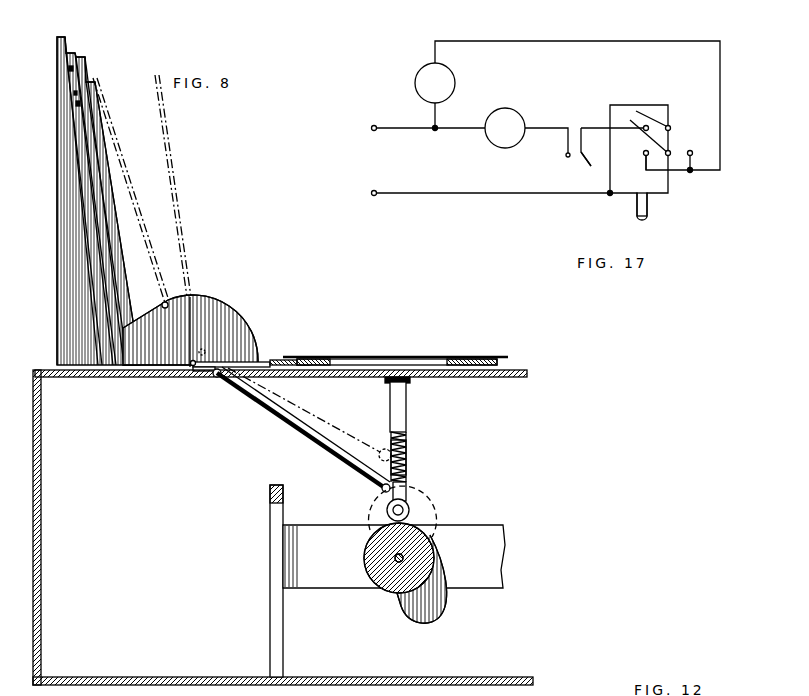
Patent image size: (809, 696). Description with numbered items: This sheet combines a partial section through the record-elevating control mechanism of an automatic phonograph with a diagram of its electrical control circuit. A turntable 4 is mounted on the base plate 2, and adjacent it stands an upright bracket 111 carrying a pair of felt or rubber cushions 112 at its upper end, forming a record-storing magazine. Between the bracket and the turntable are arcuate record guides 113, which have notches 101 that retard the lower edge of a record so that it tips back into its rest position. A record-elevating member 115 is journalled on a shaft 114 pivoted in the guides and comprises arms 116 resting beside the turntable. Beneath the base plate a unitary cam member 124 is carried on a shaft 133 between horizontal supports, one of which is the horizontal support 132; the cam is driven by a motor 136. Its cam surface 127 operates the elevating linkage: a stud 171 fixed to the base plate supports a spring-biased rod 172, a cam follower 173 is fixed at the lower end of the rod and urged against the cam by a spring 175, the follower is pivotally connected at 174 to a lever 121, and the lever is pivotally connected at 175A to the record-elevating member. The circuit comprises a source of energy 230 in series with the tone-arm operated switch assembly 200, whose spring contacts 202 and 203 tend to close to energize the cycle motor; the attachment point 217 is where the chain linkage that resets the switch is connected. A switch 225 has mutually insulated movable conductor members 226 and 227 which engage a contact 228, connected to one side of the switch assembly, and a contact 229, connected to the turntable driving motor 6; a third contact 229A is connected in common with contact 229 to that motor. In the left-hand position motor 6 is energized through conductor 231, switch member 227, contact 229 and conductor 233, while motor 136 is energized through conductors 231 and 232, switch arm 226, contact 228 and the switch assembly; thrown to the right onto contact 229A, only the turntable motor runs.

In FIG. 8, the base plate 2 is at (517, 369).
In FIG. 8, the turntable 4 is at (450, 357).
In FIG. 17, the turntable driving motor 6 is at (420, 80).
In FIG. 8, the notches 101 is at (168, 303).
In FIG. 8, the upright bracket 111 is at (93, 203).
In FIG. 8, the cushions 112 is at (72, 68).
In FIG. 8, the record guides 113 is at (220, 322).
In FIG. 8, the shaft 114 is at (185, 378).
In FIG. 8, the record-elevating member 115 is at (257, 363).
In FIG. 8, the arms 116 is at (282, 360).
In FIG. 8, the lever 121 is at (277, 423).
In FIG. 8, the unitary cam member 124 is at (358, 559).
In FIG. 8, the cam surface 127 is at (395, 603).
In FIG. 8, the horizontal support 132 is at (503, 538).
In FIG. 8, the shaft 133 is at (403, 556).
In FIG. 17, the motor 136 is at (508, 108).
In FIG. 8, the stud 171 is at (405, 423).
In FIG. 8, the spring-biased rod 172 is at (405, 455).
In FIG. 8, the cam follower 173 is at (407, 498).
In FIG. 8, the pivotal connection 174 is at (383, 490).
In FIG. 8, the spring 175 is at (405, 440).
In FIG. 8, the pivotal connection 175A is at (218, 378).
In FIG. 17, the switch assembly 200 is at (560, 143).
In FIG. 17, the spring contact 202 is at (569, 157).
In FIG. 17, the spring contact 203 is at (588, 160).
In FIG. 17, the chain attachment point 217 is at (635, 215).
In FIG. 17, the switch 225 is at (637, 110).
In FIG. 17, the movable conductor member 226 is at (668, 125).
In FIG. 17, the movable conductor member 227 is at (660, 147).
In FIG. 17, the contact 228 is at (632, 148).
In FIG. 17, the contact 229 is at (645, 157).
In FIG. 17, the third contact 229A is at (700, 147).
In FIG. 17, the source of energy 230 is at (368, 133).
In FIG. 17, the conductor 231 is at (490, 195).
In FIG. 17, the conductor 232 is at (610, 113).
In FIG. 17, the conductor 233 is at (560, 40).